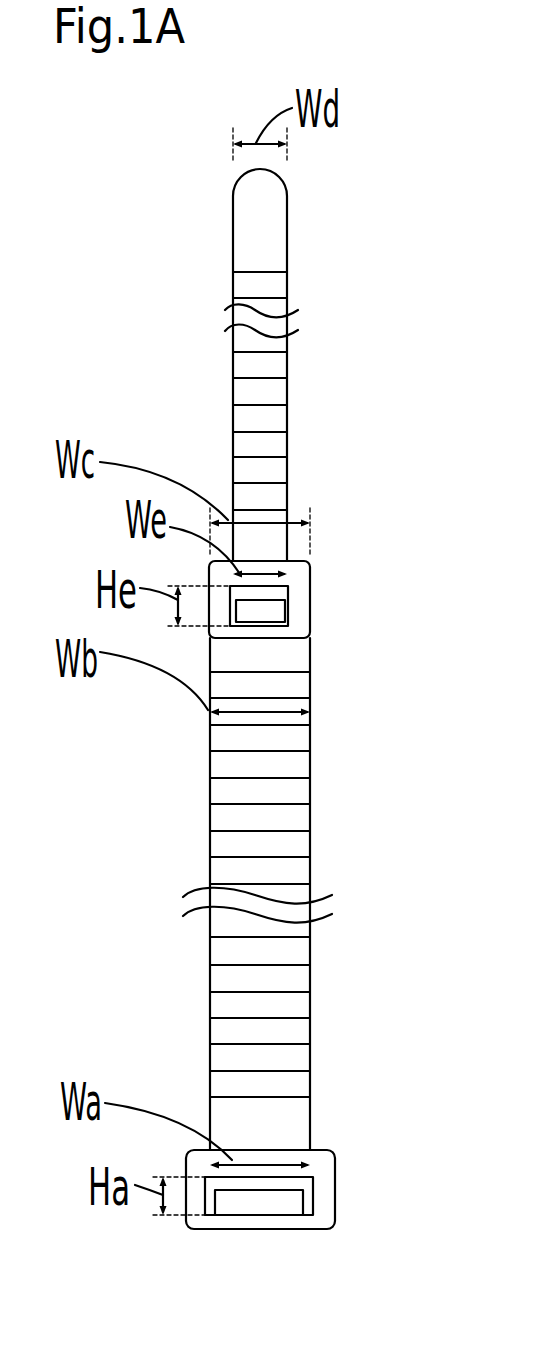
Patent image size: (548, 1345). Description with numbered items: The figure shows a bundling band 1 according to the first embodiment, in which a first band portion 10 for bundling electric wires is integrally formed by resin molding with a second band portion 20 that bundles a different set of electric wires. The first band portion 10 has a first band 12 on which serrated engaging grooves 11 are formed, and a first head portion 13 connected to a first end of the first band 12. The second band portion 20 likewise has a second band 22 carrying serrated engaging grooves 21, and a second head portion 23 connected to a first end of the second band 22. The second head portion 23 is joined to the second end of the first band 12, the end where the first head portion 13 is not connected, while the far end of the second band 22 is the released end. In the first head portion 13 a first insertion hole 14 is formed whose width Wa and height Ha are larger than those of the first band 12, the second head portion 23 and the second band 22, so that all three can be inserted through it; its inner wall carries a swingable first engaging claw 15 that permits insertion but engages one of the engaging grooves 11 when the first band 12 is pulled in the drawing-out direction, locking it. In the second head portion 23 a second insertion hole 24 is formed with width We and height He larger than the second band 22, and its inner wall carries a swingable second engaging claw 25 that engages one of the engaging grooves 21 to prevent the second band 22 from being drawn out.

The bundling band 1 is at (176, 336).
The first band portion 10 is at (331, 640).
The engaging grooves 11 is at (240, 857).
The first band 12 is at (210, 1010).
The first head portion 13 is at (330, 1155).
The first insertion hole 14 is at (312, 1188).
The first engaging claw 15 is at (288, 1205).
The second band portion 20 is at (332, 180).
The engaging grooves 21 is at (255, 457).
The second band 22 is at (233, 388).
The second head portion 23 is at (300, 562).
The second insertion hole 24 is at (290, 590).
The second engaging claw 25 is at (267, 615).